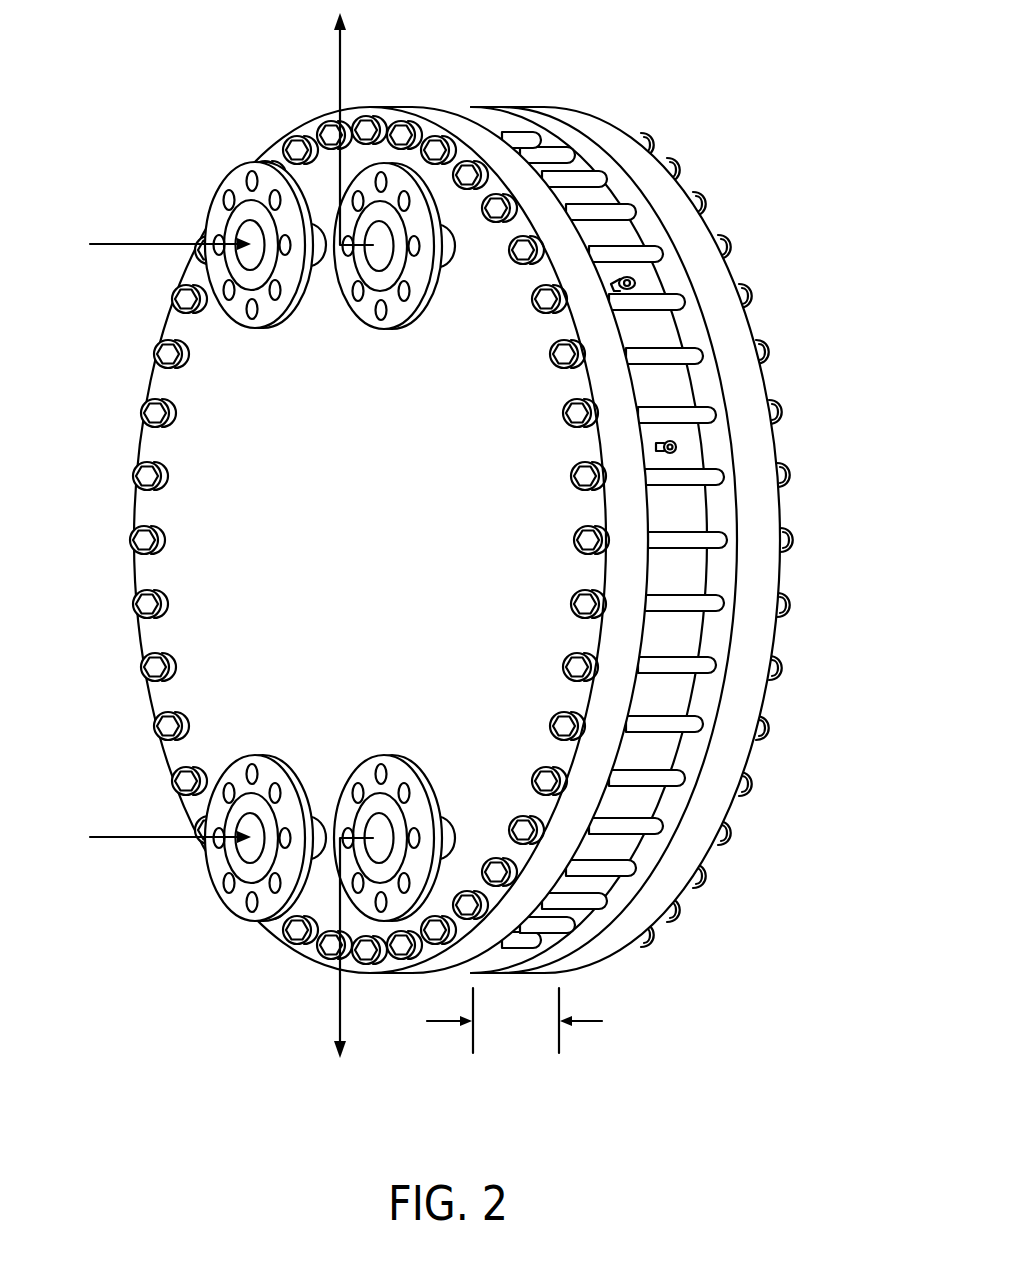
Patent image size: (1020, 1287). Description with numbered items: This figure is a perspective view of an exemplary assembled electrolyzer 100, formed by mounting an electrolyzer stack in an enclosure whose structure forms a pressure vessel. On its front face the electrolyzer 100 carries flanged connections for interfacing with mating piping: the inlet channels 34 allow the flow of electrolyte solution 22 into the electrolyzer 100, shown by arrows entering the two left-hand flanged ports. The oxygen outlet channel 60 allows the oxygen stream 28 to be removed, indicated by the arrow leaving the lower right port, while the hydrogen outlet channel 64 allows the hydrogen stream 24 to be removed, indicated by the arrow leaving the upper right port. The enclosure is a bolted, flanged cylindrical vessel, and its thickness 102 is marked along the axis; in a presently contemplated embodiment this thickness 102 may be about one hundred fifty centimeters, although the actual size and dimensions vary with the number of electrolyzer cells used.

The electrolyzer 100 is at (152, 72).
The electrolyte solution 22 is at (143, 244).
The hydrogen stream 24 is at (341, 67).
The oxygen stream 28 is at (338, 1007).
The inlet channels 34 is at (250, 258).
The oxygen outlet channel 60 is at (372, 852).
The hydrogen outlet channel 64 is at (366, 257).
The thickness 102 is at (517, 1022).